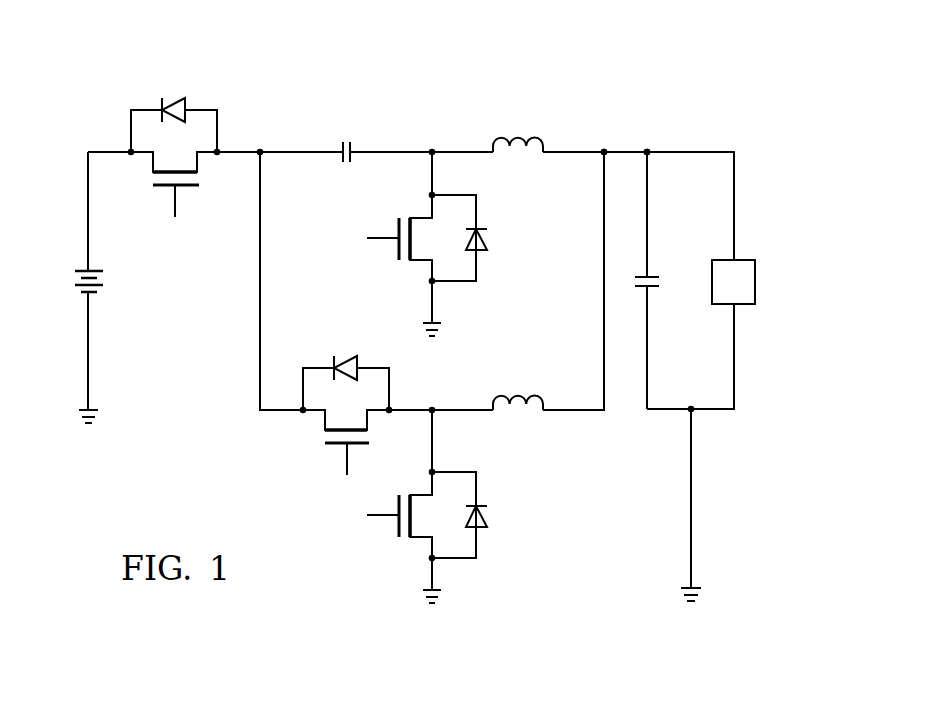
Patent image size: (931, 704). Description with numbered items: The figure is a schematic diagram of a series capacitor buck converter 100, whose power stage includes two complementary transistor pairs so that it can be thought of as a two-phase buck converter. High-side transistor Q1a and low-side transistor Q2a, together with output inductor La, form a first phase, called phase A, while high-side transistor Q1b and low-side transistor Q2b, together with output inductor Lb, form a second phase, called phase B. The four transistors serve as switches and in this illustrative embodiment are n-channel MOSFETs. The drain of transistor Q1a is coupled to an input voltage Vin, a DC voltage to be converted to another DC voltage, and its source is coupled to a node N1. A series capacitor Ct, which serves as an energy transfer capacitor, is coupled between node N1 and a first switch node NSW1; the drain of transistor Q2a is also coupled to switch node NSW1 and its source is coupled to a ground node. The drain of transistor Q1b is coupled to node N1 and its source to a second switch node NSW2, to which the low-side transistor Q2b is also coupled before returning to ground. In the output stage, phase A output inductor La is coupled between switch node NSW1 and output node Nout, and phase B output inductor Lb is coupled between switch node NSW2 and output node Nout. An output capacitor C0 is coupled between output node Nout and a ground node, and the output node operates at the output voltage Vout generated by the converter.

The series capacitor buck converter 100 is at (342, 70).
The high-side transistor Q1a is at (174, 140).
The high-side transistor Q1b is at (346, 398).
The low-side transistor Q2a is at (449, 238).
The low-side transistor Q2b is at (449, 515).
The series capacitor Ct is at (343, 134).
The output inductor La is at (518, 125).
The output inductor Lb is at (518, 383).
The output capacitor C0 is at (663, 288).
The input voltage Vin is at (104, 278).
The output voltage Vout is at (758, 277).
The node N1 is at (264, 133).
The first switch node NSW1 is at (430, 132).
The second switch node NSW2 is at (427, 391).
The output node Nout is at (630, 134).